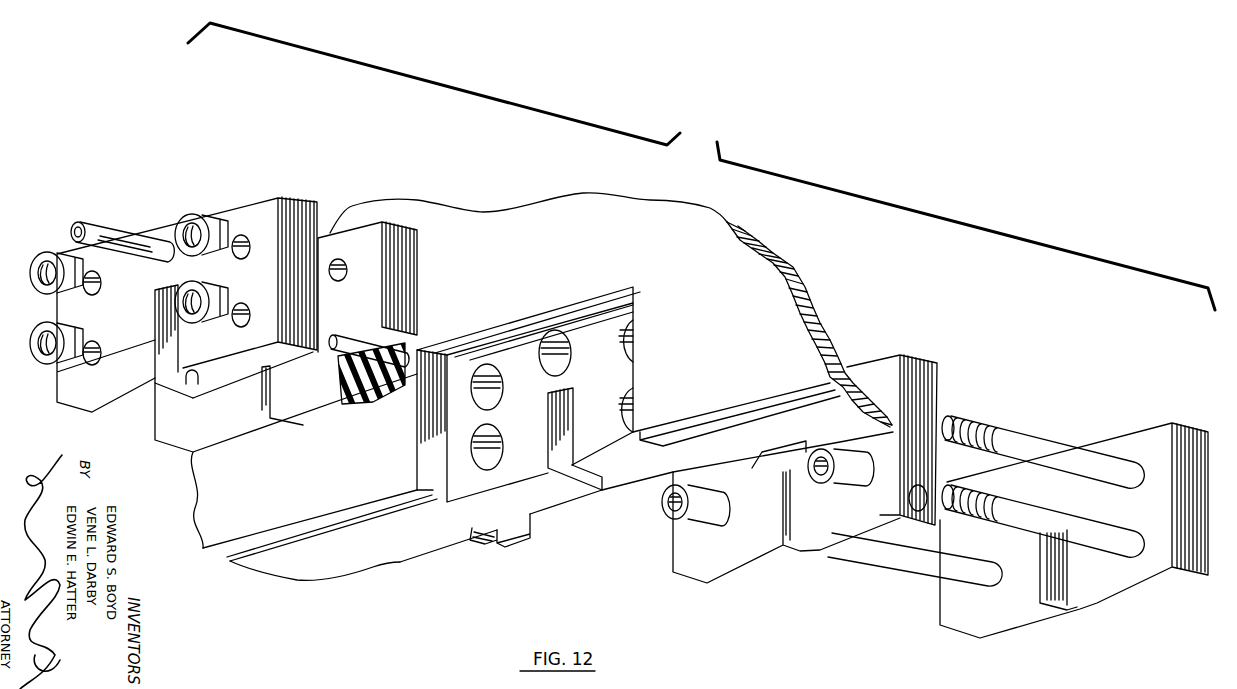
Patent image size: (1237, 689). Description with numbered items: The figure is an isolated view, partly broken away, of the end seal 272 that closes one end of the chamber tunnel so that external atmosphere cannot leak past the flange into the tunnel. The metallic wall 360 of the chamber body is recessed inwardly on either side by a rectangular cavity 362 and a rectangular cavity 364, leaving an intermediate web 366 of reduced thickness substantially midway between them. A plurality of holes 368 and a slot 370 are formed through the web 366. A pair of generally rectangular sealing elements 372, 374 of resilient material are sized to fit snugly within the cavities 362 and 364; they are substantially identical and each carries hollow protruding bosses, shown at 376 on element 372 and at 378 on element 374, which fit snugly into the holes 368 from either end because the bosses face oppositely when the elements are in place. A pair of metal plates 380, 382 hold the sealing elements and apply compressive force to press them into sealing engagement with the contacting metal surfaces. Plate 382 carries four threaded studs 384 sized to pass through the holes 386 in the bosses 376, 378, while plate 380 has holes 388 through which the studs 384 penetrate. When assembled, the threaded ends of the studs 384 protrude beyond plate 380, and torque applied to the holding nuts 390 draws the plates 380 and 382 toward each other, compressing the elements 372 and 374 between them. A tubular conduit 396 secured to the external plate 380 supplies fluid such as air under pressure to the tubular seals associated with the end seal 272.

The end seal 272 is at (701, 166).
The metallic wall 360 is at (545, 225).
The cavity 362 is at (623, 313).
The cavity 364 is at (540, 514).
The web 366 is at (570, 490).
The holes 368 is at (480, 393).
The slot 370 is at (565, 462).
The sealing element 372 is at (397, 285).
The sealing element 374 is at (918, 380).
The hollow protruding boss 376 is at (393, 385).
The hollow protruding boss 378 is at (717, 510).
The metal plate 380 is at (297, 212).
The metal plate 382 is at (1145, 445).
The threaded studs 384 is at (1018, 437).
The holes 386 is at (335, 337).
The holes 388 is at (239, 258).
The holding nuts 390 is at (190, 220).
The tubular conduit 396 is at (100, 230).